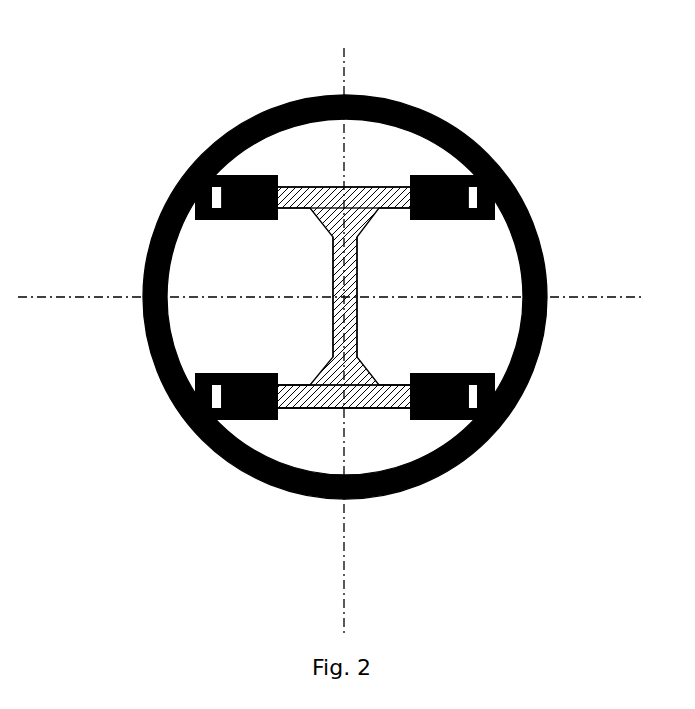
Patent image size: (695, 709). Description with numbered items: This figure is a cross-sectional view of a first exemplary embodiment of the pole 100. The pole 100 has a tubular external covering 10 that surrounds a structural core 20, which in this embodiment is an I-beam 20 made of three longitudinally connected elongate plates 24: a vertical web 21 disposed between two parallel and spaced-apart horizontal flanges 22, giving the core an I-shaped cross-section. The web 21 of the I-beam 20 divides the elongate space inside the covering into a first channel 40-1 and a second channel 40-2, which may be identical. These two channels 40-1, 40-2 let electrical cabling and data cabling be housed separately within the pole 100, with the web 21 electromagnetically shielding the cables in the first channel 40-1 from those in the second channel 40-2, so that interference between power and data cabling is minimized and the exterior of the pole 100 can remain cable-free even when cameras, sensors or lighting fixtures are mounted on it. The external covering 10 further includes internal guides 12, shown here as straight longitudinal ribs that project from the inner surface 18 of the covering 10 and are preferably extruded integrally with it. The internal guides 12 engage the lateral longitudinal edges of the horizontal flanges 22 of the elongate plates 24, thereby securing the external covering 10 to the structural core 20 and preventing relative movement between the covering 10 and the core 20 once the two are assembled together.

The external covering 10 is at (437, 118).
The internal guides 12 is at (213, 220).
The inner surface 18 is at (520, 262).
The structural core 20 is at (363, 400).
The vertical web 21 is at (333, 268).
The horizontal flanges 22 is at (293, 197).
The elongate plates 24 is at (256, 317).
The first channel 40-1 is at (198, 335).
The second channel 40-2 is at (470, 330).
The pole 100 is at (557, 115).